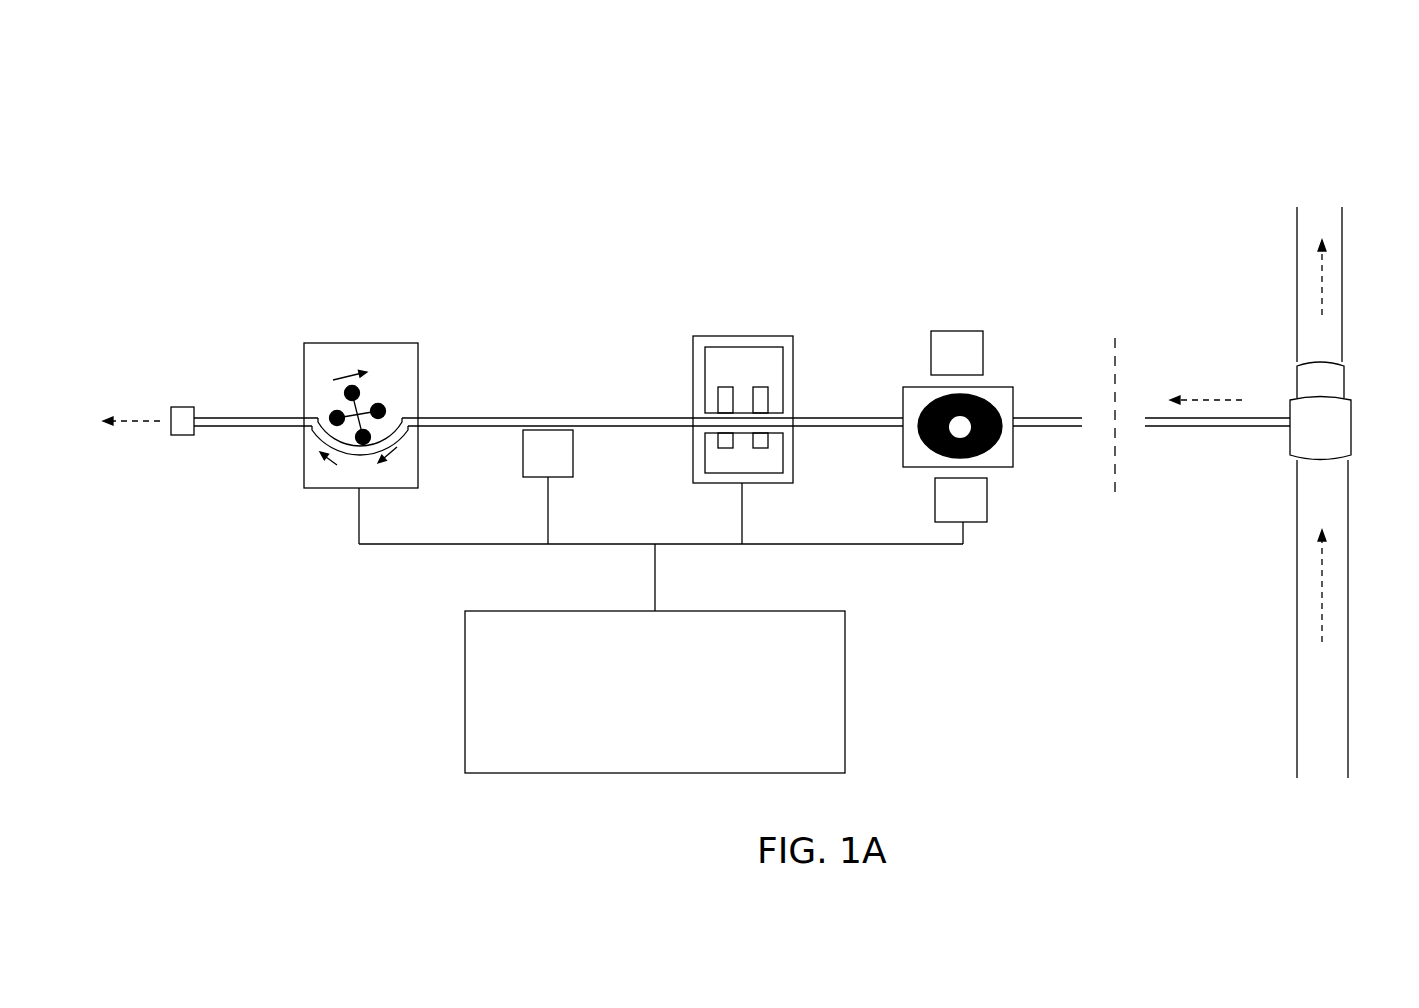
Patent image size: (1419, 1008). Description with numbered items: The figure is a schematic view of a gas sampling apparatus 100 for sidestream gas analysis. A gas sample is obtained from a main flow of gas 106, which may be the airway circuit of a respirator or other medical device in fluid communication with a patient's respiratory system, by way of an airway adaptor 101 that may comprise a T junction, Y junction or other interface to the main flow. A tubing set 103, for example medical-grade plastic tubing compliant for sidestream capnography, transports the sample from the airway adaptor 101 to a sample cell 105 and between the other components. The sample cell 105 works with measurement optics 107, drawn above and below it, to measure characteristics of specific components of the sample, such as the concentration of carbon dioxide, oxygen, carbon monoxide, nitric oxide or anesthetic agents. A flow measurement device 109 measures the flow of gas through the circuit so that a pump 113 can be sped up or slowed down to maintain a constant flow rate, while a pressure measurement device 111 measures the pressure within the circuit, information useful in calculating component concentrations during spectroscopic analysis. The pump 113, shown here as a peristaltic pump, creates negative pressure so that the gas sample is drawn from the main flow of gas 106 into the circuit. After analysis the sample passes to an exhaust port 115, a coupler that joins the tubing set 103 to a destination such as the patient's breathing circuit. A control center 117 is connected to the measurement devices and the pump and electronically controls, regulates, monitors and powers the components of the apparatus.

The gas sampling apparatus 100 is at (1288, 84).
The airway adaptor 101 is at (1345, 380).
The tubing set 103 is at (253, 417).
The sample cell 105 is at (1002, 467).
The main flow of gas 106 is at (1297, 317).
The measurement optics 107 is at (952, 331).
The flow measurement device 109 is at (683, 333).
The pressure measurement device 111 is at (573, 460).
The pump 113 is at (432, 333).
The exhaust port 115 is at (180, 405).
The control center 117 is at (661, 658).